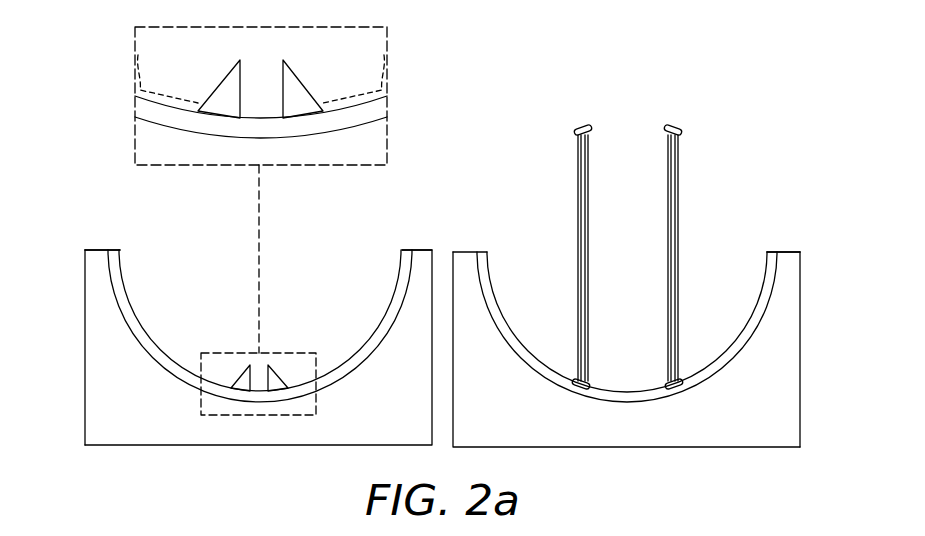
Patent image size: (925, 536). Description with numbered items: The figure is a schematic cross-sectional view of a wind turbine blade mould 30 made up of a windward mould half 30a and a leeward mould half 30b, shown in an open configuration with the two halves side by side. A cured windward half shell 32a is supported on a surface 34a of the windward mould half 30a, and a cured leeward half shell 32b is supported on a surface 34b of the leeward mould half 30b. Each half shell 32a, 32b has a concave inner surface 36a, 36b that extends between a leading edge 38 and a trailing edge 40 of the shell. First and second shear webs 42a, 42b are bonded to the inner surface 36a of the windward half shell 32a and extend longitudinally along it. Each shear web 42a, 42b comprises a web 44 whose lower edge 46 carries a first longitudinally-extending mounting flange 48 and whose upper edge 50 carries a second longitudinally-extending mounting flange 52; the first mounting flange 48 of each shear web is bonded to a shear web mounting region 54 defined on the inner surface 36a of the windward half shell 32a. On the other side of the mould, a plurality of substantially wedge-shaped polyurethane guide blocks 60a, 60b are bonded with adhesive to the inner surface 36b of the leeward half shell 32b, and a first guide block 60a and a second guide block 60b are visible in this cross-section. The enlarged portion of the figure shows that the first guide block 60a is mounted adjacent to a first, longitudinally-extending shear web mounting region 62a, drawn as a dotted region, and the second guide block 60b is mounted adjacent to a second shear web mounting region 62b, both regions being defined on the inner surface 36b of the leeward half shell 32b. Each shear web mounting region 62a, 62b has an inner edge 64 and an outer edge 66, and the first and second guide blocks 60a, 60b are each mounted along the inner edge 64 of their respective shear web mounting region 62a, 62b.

The wind turbine blade mould 30 is at (446, 172).
The windward mould half 30a is at (790, 429).
The leeward mould half 30b is at (90, 428).
The windward half shell 32a is at (745, 338).
The leeward half shell 32b is at (138, 333).
The surface of the windward mould half 34a is at (768, 307).
The surface of the leeward mould half 34b is at (117, 305).
The inner surface of the windward half shell 36a is at (765, 268).
The inner surface of the leeward half shell 36b is at (121, 268).
The leading edge 38 is at (403, 250).
The trailing edge 40 is at (112, 250).
The first shear web 42a is at (684, 177).
The second shear web 42b is at (576, 177).
The web 44 is at (668, 218).
The lower edge 46 is at (660, 373).
The first mounting flange 48 is at (573, 378).
The upper edge 50 is at (664, 117).
The second mounting flange 52 is at (578, 125).
The shear web mounting region 54 is at (569, 393).
The first guide block 60a is at (242, 378).
The second guide block 60b is at (277, 378).
The first shear web mounting region 62a is at (192, 96).
The second shear web mounting region 62b is at (330, 96).
The inner edge 64 is at (221, 82).
The outer edge 66 is at (135, 48).